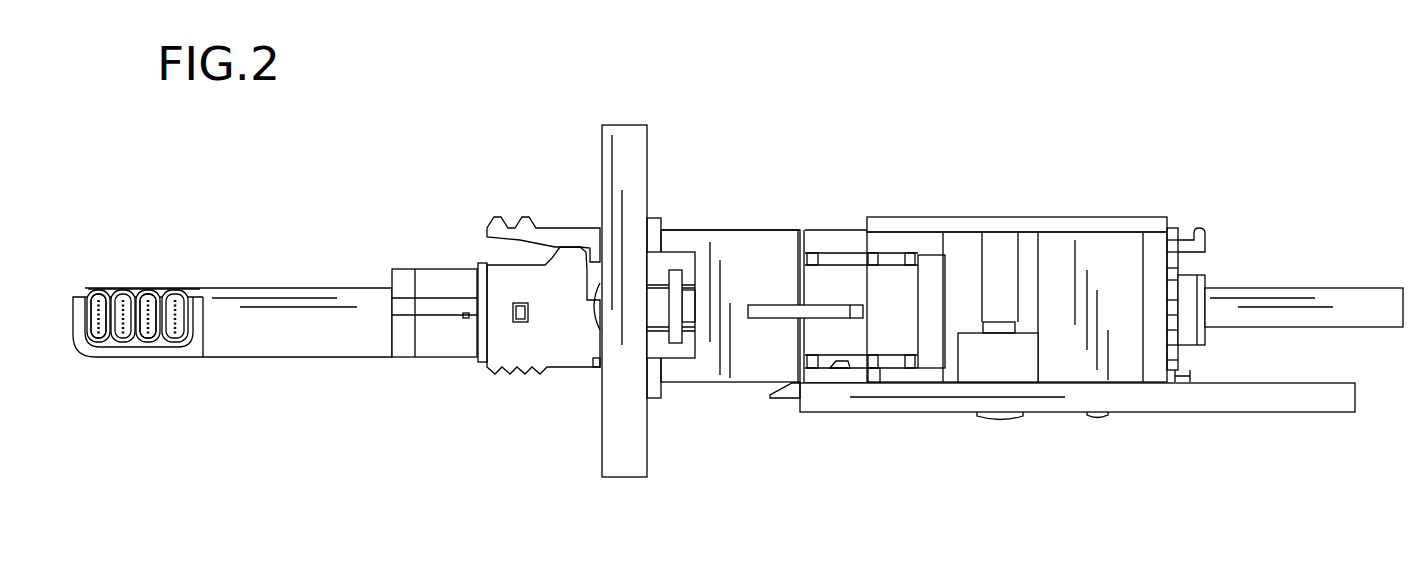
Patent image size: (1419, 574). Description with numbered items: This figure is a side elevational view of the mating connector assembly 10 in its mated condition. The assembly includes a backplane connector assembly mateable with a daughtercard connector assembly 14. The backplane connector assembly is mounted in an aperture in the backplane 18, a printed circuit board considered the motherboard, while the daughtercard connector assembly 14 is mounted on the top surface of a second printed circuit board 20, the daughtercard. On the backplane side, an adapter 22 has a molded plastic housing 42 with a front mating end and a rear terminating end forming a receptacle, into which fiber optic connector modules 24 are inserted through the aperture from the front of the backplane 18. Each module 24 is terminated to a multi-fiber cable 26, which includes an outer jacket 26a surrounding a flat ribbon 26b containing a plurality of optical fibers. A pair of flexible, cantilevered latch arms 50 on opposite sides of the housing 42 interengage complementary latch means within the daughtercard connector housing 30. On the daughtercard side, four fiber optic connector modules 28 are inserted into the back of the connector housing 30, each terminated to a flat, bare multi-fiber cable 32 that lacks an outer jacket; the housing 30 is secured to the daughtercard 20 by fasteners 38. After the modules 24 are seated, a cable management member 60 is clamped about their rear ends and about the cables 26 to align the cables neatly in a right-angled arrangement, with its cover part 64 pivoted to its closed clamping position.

The mating connector assembly 10 is at (790, 133).
The daughtercard connector assembly 14 is at (1022, 203).
The backplane 18 is at (617, 150).
The second printed circuit board 20 is at (1290, 393).
The adapter 22 is at (715, 395).
The fiber optic connector module 24 is at (558, 382).
The multi-fiber cable 26 is at (98, 291).
The outer jacket 26a is at (152, 345).
The flat ribbon 26b is at (123, 345).
The fiber optic connector module 28 is at (1203, 262).
The connector housing 30 is at (1110, 333).
The flat multi-fiber cable 32 is at (1307, 290).
The fasteners 38 is at (1000, 420).
The housing 42 is at (745, 242).
The latch arms 50 is at (826, 276).
The cable management member 60 is at (258, 276).
The cover part 64 is at (290, 330).